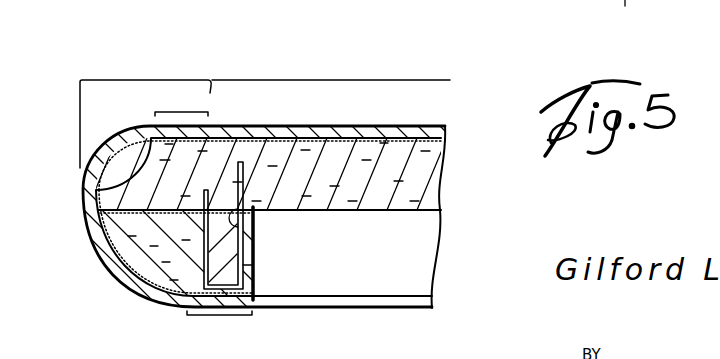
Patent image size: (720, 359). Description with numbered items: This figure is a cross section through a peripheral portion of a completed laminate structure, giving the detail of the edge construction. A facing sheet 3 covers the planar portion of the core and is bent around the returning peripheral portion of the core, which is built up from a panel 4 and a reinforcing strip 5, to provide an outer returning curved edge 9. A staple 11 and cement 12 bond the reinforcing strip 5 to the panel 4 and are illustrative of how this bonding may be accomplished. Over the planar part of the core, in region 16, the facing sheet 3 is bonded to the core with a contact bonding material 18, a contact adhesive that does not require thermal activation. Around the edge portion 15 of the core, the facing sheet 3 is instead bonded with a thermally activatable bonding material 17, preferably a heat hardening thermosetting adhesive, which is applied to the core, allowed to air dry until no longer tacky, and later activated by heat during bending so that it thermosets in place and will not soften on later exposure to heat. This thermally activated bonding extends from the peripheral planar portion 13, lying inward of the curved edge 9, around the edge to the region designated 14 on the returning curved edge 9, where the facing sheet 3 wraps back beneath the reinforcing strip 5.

The facing sheet 3 is at (97, 250).
The panel 4 is at (413, 193).
The reinforcing strip 5 is at (147, 250).
The returning curved edge 9 is at (83, 212).
The staple 11 is at (256, 259).
The cement 12 is at (258, 231).
The peripheral planar portion 13 is at (183, 112).
The region around the returning curved edge 14 is at (220, 315).
The edge portion of the core 15 is at (143, 80).
The region 16 is at (332, 80).
The thermally activatable bonding material 17 is at (127, 134).
The contact bonding material 18 is at (393, 146).